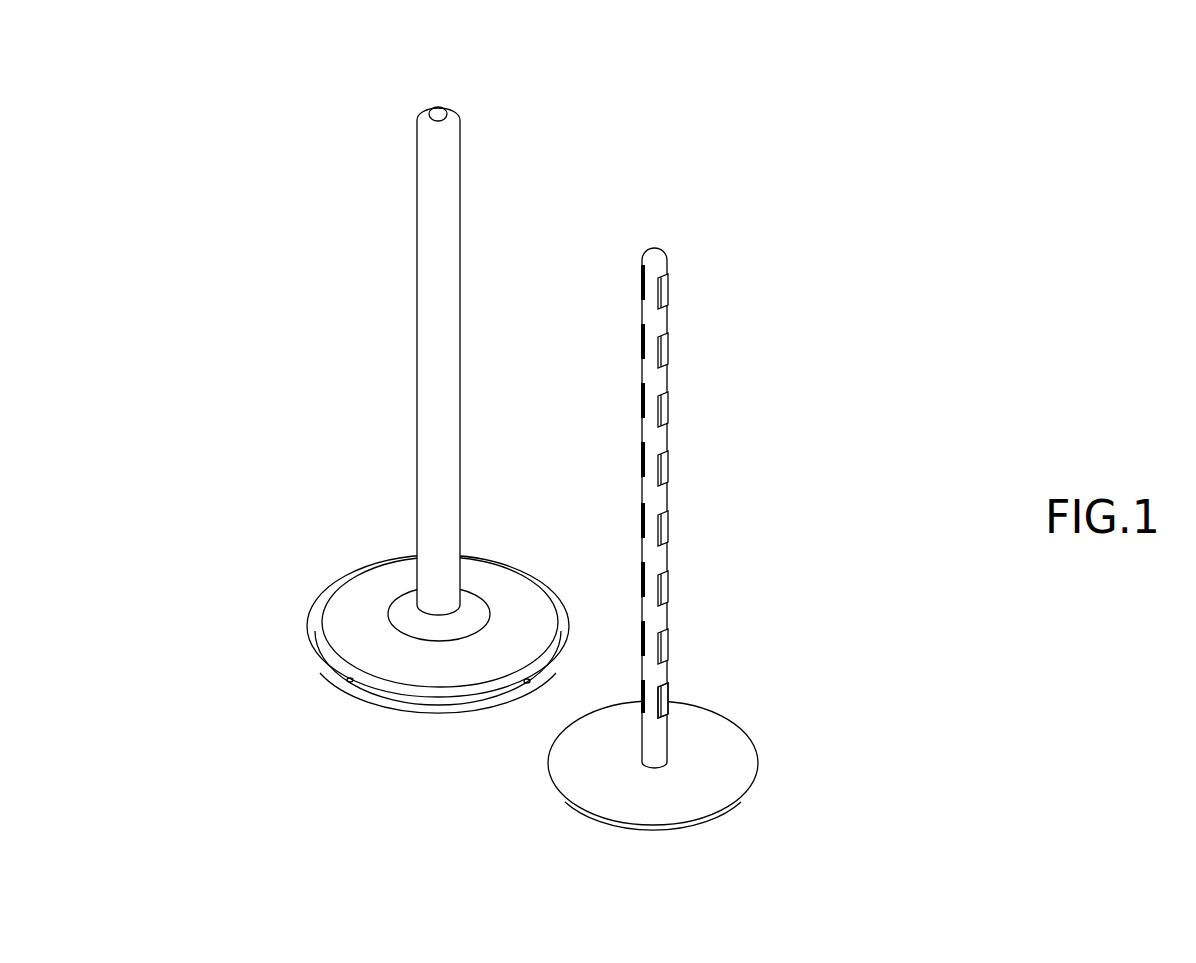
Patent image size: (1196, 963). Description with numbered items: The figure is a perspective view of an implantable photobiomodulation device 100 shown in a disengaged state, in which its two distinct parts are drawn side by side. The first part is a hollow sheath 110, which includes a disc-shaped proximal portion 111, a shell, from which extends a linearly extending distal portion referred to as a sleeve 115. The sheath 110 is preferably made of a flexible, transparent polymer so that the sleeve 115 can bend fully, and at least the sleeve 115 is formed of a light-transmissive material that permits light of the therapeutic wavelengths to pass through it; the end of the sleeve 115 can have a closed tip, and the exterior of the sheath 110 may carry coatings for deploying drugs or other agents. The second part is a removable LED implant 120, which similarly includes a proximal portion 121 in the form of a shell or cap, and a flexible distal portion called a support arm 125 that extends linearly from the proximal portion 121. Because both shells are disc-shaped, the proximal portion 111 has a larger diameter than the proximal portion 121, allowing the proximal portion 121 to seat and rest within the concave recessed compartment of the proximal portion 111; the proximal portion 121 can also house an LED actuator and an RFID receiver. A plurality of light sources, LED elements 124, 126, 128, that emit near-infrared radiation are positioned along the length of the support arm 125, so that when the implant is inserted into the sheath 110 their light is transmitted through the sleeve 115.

The implantable photobiomodulation device 100 is at (298, 97).
The hollow sheath 110 is at (423, 77).
The proximal portion 111 is at (448, 698).
The sleeve 115 is at (412, 317).
The LED implant 120 is at (642, 217).
The proximal portion 121 is at (697, 780).
The LED element 124 is at (673, 288).
The support arm 125 is at (687, 490).
The LED element 126 is at (668, 437).
The LED element 128 is at (668, 673).